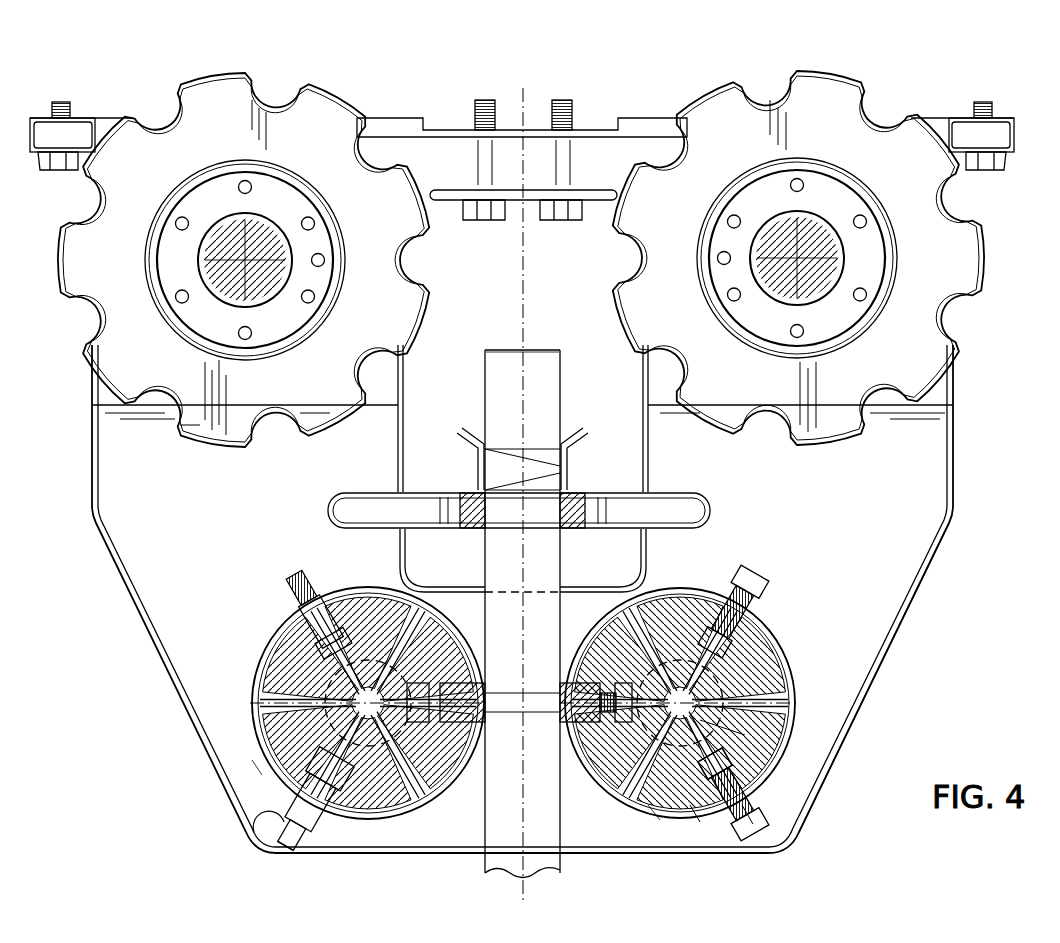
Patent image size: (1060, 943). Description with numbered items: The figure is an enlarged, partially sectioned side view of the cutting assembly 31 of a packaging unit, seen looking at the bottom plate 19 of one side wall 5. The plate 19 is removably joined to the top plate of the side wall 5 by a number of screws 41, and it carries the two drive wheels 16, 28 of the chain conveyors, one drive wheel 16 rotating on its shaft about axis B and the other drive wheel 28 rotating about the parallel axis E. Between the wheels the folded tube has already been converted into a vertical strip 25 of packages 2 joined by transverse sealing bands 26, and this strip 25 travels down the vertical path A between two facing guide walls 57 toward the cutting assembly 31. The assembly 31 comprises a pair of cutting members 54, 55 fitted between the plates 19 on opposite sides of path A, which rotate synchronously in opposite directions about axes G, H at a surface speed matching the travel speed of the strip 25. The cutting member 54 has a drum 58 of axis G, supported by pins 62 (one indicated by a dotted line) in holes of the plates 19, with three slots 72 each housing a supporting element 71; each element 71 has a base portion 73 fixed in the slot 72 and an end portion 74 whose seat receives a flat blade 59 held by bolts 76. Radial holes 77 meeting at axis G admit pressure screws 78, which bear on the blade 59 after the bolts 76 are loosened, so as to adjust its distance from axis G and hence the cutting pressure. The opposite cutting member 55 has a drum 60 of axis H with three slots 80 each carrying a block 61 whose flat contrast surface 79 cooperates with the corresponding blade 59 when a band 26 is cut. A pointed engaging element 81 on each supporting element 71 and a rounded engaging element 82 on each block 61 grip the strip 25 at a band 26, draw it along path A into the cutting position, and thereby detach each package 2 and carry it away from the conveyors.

The package 2 is at (561, 352).
The side wall 5 is at (908, 486).
The drive wheel 16 is at (798, 247).
The bottom plate 19 is at (931, 528).
The strip of packages 25 is at (517, 344).
The transverse sealing band 26 is at (540, 477).
The drive wheel 28 is at (243, 250).
The cutting assembly 31 is at (346, 702).
The screw 41 is at (66, 104).
The cutting member 54 is at (660, 820).
The cutting member 55 is at (250, 763).
The guide wall 57 is at (477, 468).
The drum 58 is at (705, 717).
The blade 59 is at (546, 723).
The drum 60 is at (300, 655).
The block 61 is at (303, 600).
The pin 62 is at (276, 672).
The supporting element 71 is at (598, 690).
The slot 72 is at (749, 766).
The base portion 73 is at (694, 821).
The end portion 74 is at (772, 850).
The bolt 76 is at (741, 828).
The radial hole 77 is at (652, 620).
The pressure screw 78 is at (746, 724).
The contrast surface 79 is at (286, 842).
The slot 80 is at (320, 813).
The engaging element 81 is at (770, 821).
The engaging element 82 is at (290, 811).
The path A is at (521, 178).
The axis B is at (746, 279).
The axis E is at (296, 276).
The axis G is at (722, 706).
The axis H is at (310, 705).